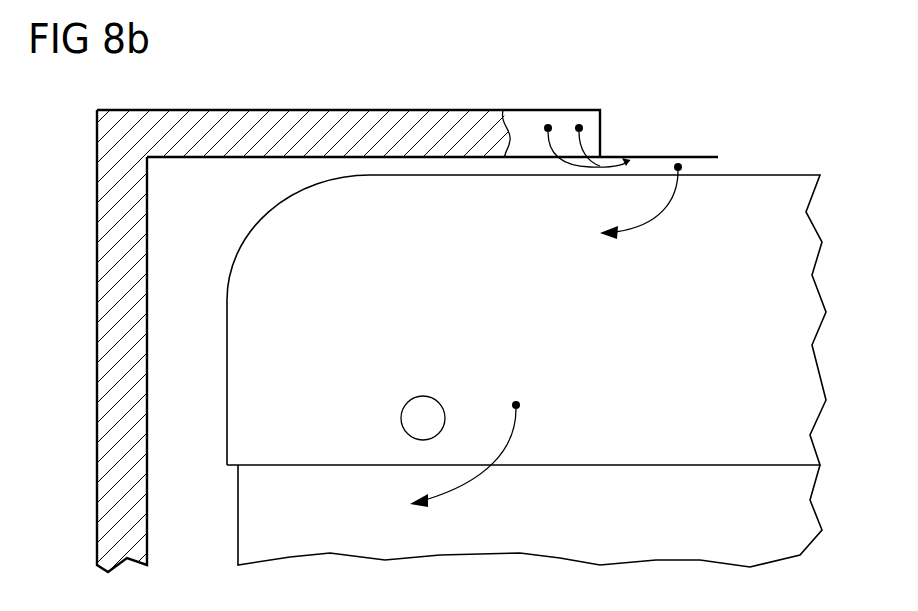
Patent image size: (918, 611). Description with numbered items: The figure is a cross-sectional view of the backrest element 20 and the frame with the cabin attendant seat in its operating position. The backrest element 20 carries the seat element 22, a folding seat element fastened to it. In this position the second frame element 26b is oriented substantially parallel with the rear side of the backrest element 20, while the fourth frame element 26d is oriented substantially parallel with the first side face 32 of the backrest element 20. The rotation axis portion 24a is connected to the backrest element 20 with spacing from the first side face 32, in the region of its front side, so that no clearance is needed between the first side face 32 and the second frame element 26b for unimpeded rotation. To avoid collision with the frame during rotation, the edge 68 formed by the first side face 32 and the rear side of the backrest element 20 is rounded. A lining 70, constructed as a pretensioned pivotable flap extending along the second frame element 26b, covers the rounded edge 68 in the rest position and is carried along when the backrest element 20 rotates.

The backrest element 20 is at (795, 352).
The seat element 22 is at (795, 522).
The rotation axis portion 24a is at (420, 398).
The second frame element 26b is at (316, 122).
The fourth frame element 26d is at (115, 272).
The first side face 32 is at (225, 367).
The rounded edge 68 is at (260, 242).
The lining 70 is at (678, 162).